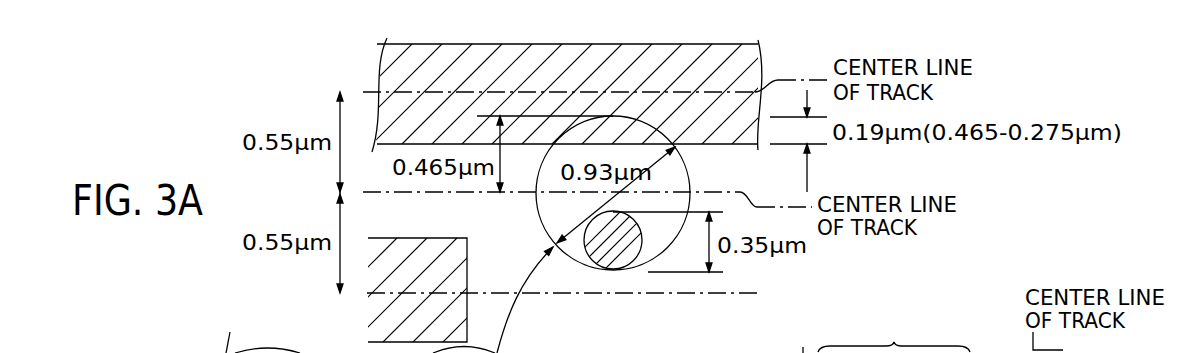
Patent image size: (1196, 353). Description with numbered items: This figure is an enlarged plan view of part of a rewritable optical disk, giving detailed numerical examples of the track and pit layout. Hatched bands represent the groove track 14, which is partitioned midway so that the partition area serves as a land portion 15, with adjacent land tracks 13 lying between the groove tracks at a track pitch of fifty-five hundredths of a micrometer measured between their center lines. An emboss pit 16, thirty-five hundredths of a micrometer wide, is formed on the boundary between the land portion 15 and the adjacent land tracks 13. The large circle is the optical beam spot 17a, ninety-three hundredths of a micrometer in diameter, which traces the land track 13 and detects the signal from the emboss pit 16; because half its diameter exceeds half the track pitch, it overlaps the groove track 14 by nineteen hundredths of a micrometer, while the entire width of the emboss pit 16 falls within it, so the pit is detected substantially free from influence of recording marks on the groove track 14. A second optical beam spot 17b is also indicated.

The land track 13 is at (752, 275).
The groove track 14 is at (753, 62).
The land portion 15 is at (802, 338).
The emboss pit 16 is at (894, 336).
The optical beam spot 17a is at (688, 170).
The optical beam spot 17b is at (590, 352).